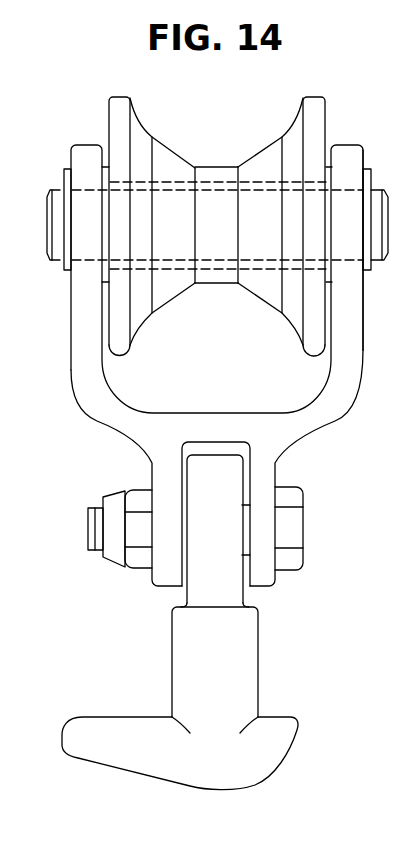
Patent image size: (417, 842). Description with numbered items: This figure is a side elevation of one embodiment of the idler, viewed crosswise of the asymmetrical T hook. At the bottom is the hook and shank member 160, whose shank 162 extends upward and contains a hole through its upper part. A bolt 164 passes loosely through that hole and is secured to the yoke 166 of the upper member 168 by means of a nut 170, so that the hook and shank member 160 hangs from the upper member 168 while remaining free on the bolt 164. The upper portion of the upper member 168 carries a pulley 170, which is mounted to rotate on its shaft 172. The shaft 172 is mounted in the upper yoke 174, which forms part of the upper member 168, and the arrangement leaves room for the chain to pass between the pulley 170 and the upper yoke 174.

The hook and shank member 160 is at (258, 648).
The shank 162 is at (250, 484).
The bolt 164 is at (303, 512).
The yoke 166 is at (152, 463).
The upper member 168 is at (364, 350).
The pulley 170 is at (326, 128).
The shaft 172 is at (388, 244).
The upper yoke 174 is at (364, 303).